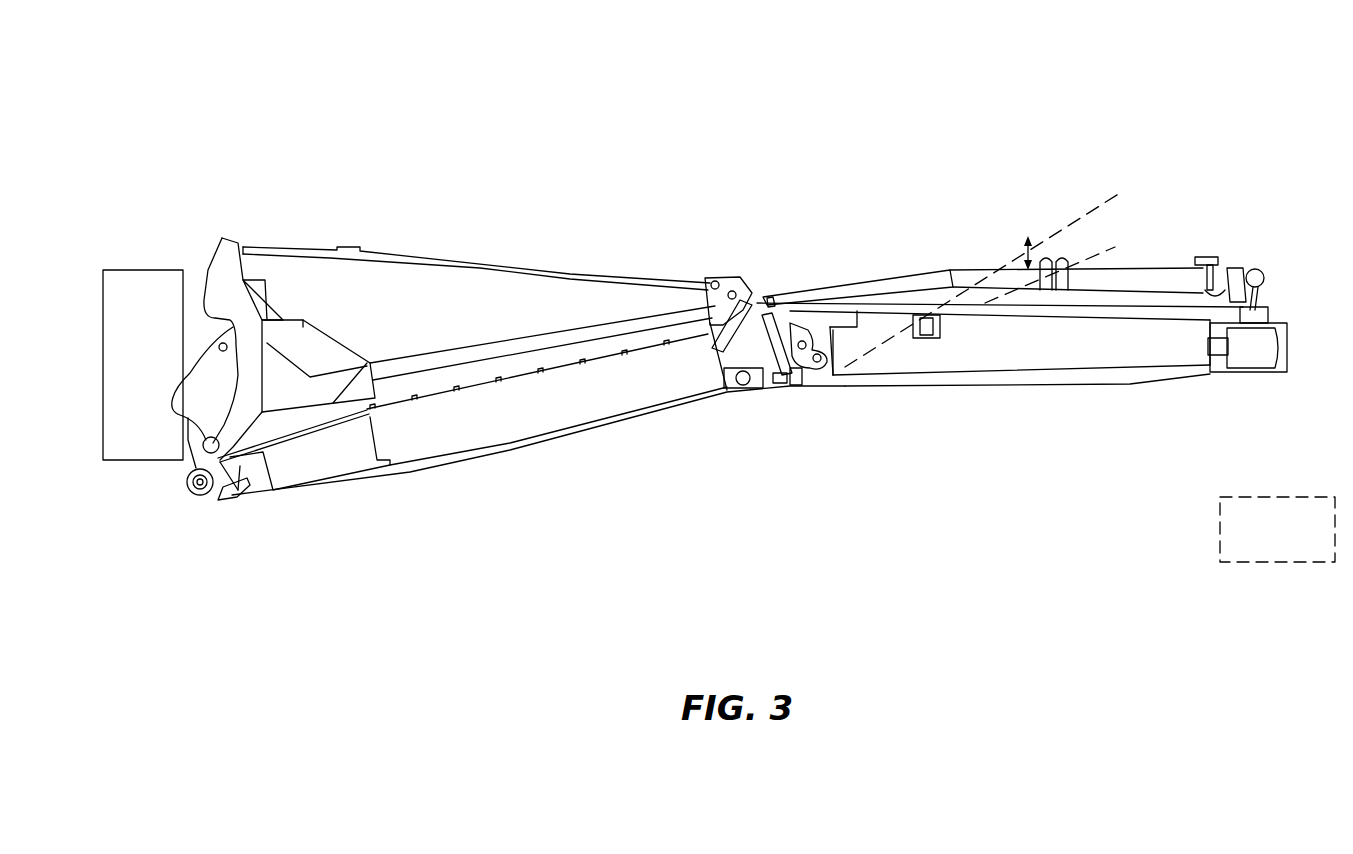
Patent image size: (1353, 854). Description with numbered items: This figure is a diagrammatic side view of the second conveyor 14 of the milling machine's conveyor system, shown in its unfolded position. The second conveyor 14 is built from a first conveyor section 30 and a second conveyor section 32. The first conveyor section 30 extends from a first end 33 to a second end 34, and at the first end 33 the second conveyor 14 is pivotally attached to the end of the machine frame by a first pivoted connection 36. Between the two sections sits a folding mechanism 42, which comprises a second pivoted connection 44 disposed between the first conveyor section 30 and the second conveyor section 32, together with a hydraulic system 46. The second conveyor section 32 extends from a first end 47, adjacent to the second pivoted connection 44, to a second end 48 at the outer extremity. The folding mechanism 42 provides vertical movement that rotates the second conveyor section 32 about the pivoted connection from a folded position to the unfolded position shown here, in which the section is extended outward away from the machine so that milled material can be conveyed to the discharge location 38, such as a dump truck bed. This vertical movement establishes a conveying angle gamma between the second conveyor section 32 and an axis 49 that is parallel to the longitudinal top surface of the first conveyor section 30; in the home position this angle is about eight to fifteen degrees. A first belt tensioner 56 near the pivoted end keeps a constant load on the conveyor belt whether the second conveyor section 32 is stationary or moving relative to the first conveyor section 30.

The second conveyor 14 is at (328, 105).
The first conveyor section 30 is at (480, 430).
The second conveyor section 32 is at (1022, 348).
The first end 33 is at (233, 497).
The second end 34 is at (741, 388).
The first pivoted connection 36 is at (193, 490).
The discharge location 38 is at (1220, 532).
The folding mechanism 42 is at (749, 260).
The second pivoted connection 44 is at (803, 335).
The hydraulic system 46 is at (872, 310).
The first end 47 is at (842, 366).
The second end 48 is at (1263, 355).
The axis 49 is at (1060, 218).
The first belt tensioner 56 is at (187, 483).